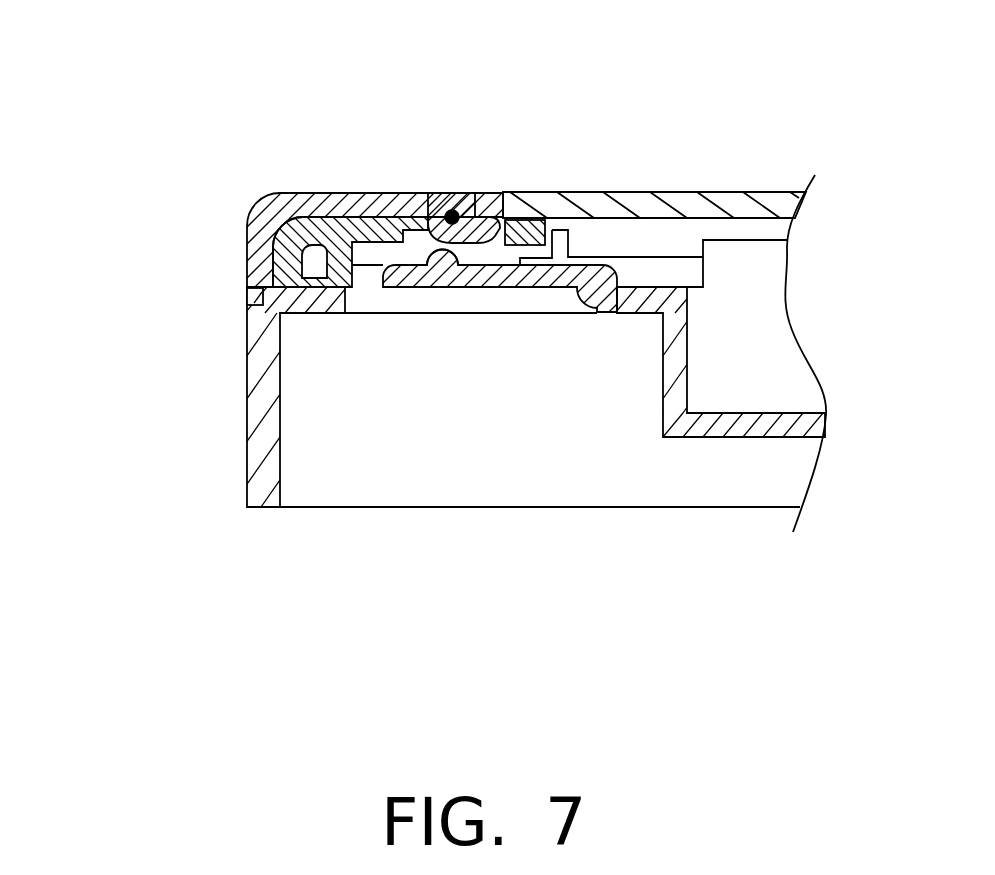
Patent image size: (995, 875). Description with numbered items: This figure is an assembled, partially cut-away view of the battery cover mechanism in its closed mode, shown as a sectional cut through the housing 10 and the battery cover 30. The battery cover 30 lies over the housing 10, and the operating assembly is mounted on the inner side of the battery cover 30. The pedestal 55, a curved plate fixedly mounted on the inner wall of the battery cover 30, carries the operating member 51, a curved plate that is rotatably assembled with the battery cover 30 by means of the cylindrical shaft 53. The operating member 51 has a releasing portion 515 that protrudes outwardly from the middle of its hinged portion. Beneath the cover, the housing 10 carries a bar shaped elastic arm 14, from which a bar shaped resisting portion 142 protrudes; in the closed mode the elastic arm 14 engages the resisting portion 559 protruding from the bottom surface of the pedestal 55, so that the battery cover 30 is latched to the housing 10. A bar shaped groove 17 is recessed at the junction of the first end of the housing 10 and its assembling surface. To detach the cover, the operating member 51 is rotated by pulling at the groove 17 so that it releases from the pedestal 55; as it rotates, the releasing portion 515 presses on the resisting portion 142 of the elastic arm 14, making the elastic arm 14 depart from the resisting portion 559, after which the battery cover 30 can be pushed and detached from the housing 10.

The housing 10 is at (263, 397).
The elastic arm 14 is at (438, 279).
The resisting portion 142 is at (449, 255).
The groove 17 is at (250, 298).
The battery cover 30 is at (607, 212).
The operating member 51 is at (333, 205).
The releasing portion 515 is at (489, 226).
The cylindrical shaft 53 is at (452, 212).
The pedestal 55 is at (297, 240).
The resisting portion 559 is at (252, 284).